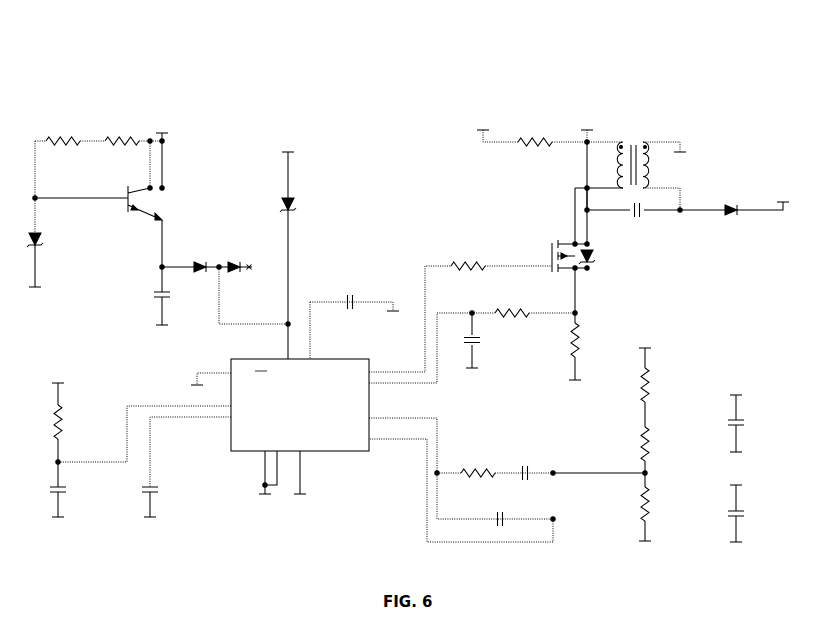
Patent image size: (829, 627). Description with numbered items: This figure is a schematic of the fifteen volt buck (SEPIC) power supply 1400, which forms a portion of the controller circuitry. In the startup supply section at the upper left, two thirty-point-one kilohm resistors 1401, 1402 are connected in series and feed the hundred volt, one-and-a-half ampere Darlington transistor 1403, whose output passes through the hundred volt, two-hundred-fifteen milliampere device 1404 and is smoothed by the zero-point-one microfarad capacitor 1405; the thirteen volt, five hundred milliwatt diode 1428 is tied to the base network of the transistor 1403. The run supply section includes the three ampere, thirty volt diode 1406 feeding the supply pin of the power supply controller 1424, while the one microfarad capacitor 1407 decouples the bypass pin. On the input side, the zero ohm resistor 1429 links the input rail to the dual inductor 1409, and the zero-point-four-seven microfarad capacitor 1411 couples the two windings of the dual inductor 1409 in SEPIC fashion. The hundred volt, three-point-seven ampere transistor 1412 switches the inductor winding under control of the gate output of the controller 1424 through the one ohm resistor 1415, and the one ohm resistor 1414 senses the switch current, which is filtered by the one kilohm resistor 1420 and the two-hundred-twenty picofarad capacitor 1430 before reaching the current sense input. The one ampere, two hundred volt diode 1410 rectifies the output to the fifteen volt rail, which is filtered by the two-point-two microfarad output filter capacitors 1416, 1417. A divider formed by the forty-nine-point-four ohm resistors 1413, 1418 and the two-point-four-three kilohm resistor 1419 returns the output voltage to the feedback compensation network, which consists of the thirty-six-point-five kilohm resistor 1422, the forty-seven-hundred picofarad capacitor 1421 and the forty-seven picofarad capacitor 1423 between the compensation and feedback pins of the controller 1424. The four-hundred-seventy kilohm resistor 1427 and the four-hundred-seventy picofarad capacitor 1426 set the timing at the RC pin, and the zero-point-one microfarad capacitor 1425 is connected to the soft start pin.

The 15 Volt buck (SEPIC) Power Supply 1400 is at (407, 284).
The 30.1 K resistor 1401 is at (63, 132).
The 30.1 K resistor 1402 is at (122, 132).
The Darlington transistor 1403 is at (165, 203).
The 100V 215 mA 1.5 pF device 1404 is at (217, 253).
The 0.1 µF capacitor 1405 is at (144, 298).
The 3 A 30V diode 1406 is at (310, 205).
The 1 µF capacitor 1407 is at (349, 289).
The dual inductor 1409 is at (634, 153).
The 1 A 200V diode 1410 is at (729, 197).
The 0.47 µF capacitor 1411 is at (646, 218).
The transistor 1412 is at (604, 256).
The 49.4 ohm resistor 1413 is at (664, 385).
The 1 ohm resistor 1414 is at (595, 340).
The 1 ohm resistor 1415 is at (471, 258).
The 2.2 µF capacitor 1416 is at (758, 424).
The 2.2 µF capacitor 1417 is at (758, 517).
The 49.4 ohm resistor 1418 is at (664, 444).
The 2.43 k resistor 1419 is at (664, 504).
The 1 k resistor 1420 is at (512, 304).
The 4700 pF capacitor 1421 is at (522, 460).
The 36.5 k resistor 1422 is at (478, 464).
The 47 pF capacitor 1423 is at (499, 508).
The power supply controller 1424 is at (300, 405).
The 0.1 µF capacitor 1425 is at (173, 493).
The 470 pF capacitor 1426 is at (80, 493).
The 470 k resistor 1427 is at (76, 422).
The 13V 500 mw diode 1428 is at (58, 240).
The zero ohm resistor 1429 is at (535, 132).
The 220 pF capacitor 1430 is at (495, 343).